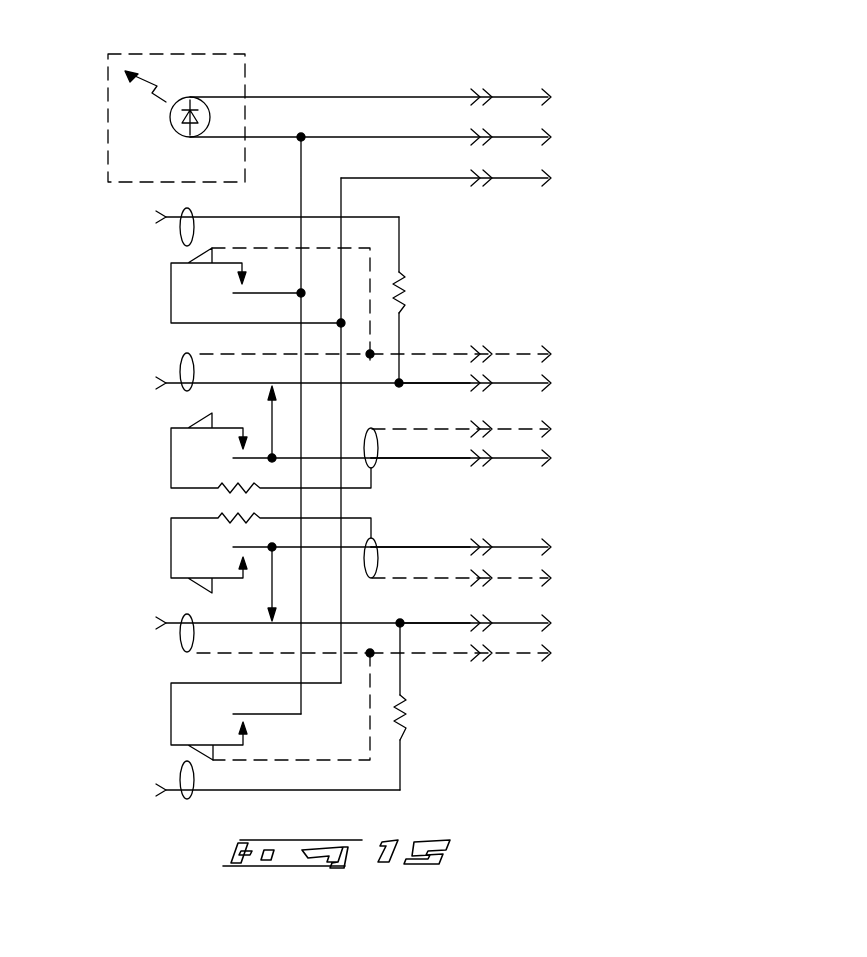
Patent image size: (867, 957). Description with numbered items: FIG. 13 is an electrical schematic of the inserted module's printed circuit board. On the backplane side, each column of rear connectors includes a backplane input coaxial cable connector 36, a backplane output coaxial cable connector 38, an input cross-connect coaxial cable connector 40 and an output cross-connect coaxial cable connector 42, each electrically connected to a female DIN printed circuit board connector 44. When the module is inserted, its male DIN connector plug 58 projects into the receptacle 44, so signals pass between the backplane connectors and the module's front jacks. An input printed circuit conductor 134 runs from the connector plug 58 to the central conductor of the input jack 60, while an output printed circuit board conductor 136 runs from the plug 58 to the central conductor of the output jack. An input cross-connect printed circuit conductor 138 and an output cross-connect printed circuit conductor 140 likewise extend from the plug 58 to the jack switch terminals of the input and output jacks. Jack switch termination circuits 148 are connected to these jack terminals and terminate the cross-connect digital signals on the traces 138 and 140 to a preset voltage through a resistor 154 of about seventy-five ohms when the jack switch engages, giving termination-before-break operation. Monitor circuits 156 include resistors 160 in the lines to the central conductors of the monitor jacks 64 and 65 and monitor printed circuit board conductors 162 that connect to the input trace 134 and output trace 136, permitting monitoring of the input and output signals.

The backplane input coaxial cable connector 36 is at (545, 380).
The backplane output coaxial cable connector 38 is at (543, 462).
The input cross-connect coaxial cable connector 40 is at (543, 618).
The output cross-connect coaxial cable connector 42 is at (543, 542).
The printed circuit board connector 44 is at (490, 355).
The printed circuit board connector 58 is at (477, 357).
The input jack 60 is at (171, 374).
The monitor jack 64 is at (172, 222).
The monitor jack 65 is at (173, 628).
The input printed circuit conductor 134 is at (456, 385).
The output printed circuit board conductor 136 is at (456, 621).
The input cross-connect printed circuit conductor 138 is at (408, 460).
The output cross-connect printed circuit conductor 140 is at (400, 545).
The jack switch termination circuit 148 is at (238, 503).
The resistor 154 is at (250, 482).
The monitor circuit 156 is at (399, 240).
The resistor 160 is at (399, 280).
The monitor printed circuit board conductor 162 is at (399, 340).